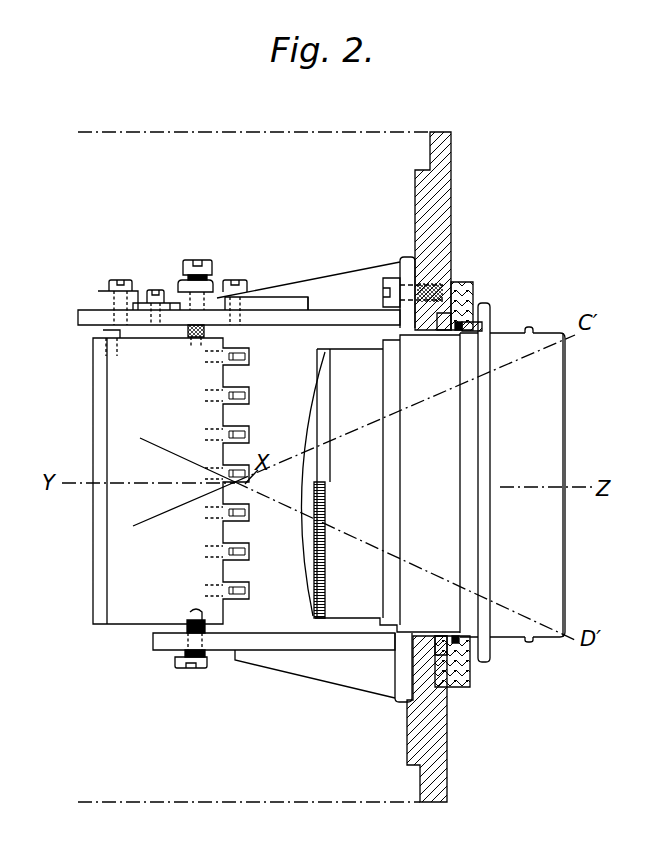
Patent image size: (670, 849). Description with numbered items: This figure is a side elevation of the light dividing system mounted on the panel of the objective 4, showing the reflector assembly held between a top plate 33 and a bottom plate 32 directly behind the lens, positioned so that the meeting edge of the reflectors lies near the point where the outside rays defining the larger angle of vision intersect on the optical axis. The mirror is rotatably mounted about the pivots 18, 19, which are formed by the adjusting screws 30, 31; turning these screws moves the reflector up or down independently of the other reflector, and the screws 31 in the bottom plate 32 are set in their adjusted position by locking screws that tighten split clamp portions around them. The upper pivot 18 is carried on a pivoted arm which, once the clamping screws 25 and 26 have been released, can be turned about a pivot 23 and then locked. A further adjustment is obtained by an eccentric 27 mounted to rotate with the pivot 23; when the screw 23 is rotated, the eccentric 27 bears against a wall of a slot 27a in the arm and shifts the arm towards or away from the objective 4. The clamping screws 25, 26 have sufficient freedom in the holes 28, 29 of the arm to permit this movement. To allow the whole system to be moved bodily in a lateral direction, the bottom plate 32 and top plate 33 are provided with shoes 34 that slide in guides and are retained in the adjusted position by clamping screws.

The objective 4 is at (328, 472).
The pivot 18 is at (195, 340).
The pivot 19 is at (195, 614).
The pivot 23 is at (155, 289).
The clamping screw 25 is at (113, 279).
The clamping screw 26 is at (240, 280).
The eccentric 27 is at (158, 309).
The slot 27a is at (179, 309).
The hole 28 is at (98, 300).
The hole 29 is at (233, 312).
The adjusting screw 30 is at (196, 259).
The adjusting screw 31 is at (186, 670).
The bottom plate 32 is at (291, 653).
The top plate 33 is at (345, 318).
The shoe 34 is at (407, 263).